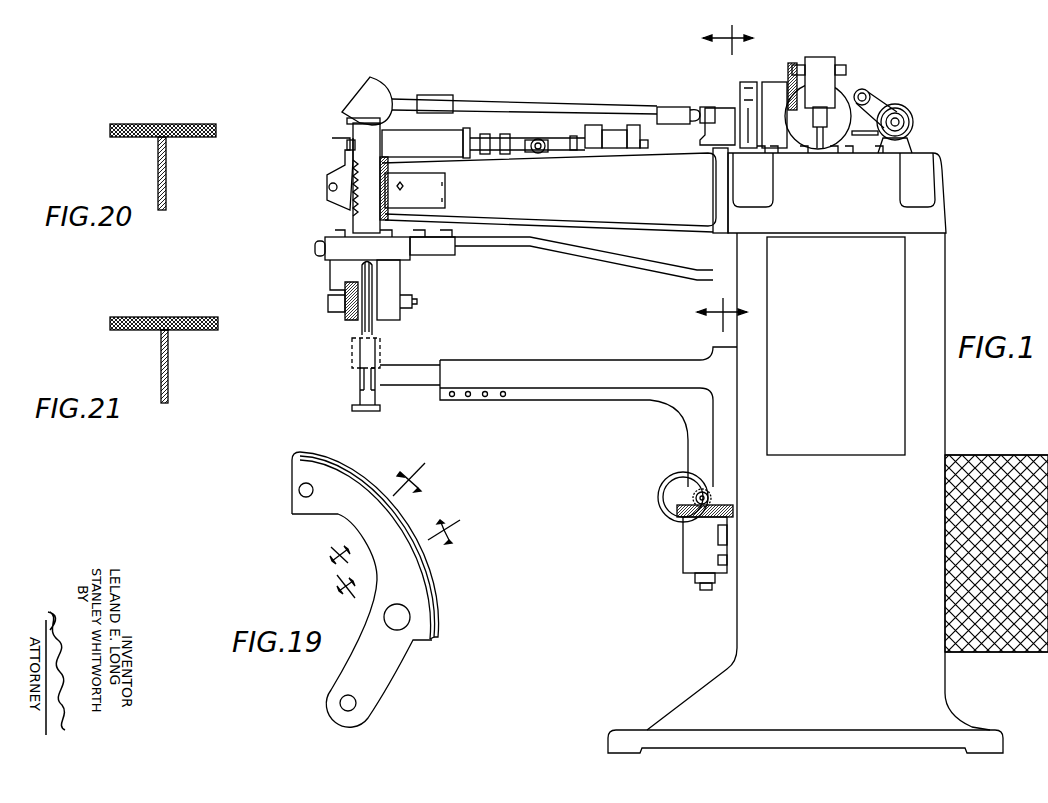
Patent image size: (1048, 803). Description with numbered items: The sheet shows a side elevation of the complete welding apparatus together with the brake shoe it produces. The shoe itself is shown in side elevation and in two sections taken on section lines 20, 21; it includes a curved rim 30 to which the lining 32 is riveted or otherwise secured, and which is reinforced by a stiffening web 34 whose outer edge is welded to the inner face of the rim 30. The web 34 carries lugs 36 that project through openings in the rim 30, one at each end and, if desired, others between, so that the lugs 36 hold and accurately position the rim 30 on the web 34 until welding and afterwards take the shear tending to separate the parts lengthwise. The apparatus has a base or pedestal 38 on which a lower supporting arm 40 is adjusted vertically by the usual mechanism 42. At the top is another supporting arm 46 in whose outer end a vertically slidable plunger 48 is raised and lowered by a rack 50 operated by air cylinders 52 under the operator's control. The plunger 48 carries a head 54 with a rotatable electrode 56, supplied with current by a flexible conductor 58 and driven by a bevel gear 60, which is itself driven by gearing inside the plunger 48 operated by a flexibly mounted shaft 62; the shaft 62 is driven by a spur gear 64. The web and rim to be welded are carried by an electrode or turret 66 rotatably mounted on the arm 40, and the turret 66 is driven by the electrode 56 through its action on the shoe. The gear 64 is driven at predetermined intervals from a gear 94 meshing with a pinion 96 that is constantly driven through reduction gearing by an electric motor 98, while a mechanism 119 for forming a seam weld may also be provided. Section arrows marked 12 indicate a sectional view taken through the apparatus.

In FIG. 1, the section line 12 is at (737, 178).
In FIG. 19, the section line 20— 20 is at (368, 509).
In FIG. 19, the section line 21— 21 is at (390, 548).
In FIG. 20, the rim 30 is at (151, 148).
In FIG. 21, the rim 30 is at (146, 347).
In FIG. 19, the rim 30 is at (433, 566).
In FIG. 20, the lining 32 is at (173, 125).
In FIG. 21, the lining 32 is at (190, 318).
In FIG. 19, the lining 32 is at (432, 588).
In FIG. 20, the stiffening web 34 is at (167, 178).
In FIG. 21, the stiffening web 34 is at (168, 365).
In FIG. 19, the stiffening web 34 is at (387, 657).
In FIG. 21, the lug 36 is at (161, 331).
In FIG. 1, the base or pedestal 38 is at (757, 613).
In FIG. 1, the lower supporting arm 40 is at (570, 378).
In FIG. 1, the adjusting mechanism 42 is at (675, 523).
In FIG. 1, the upper supporting arm 46 is at (503, 203).
In FIG. 1, the plunger 48 is at (368, 203).
In FIG. 1, the rack 50 is at (333, 162).
In FIG. 1, the air cylinder 52 is at (470, 140).
In FIG. 1, the head 54 is at (345, 245).
In FIG. 1, the rotatable electrode 56 is at (362, 327).
In FIG. 1, the flexible conductor 58 is at (560, 246).
In FIG. 1, the bevel gear 60 is at (342, 290).
In FIG. 1, the flexibly-mounted shaft 62 is at (527, 108).
In FIG. 1, the spur gear 64 is at (743, 110).
In FIG. 1, the turret electrode 66 is at (355, 380).
In FIG. 1, the gear 94 is at (797, 92).
In FIG. 1, the pinion 96 is at (788, 67).
In FIG. 1, the electric motor 98 is at (870, 100).
In FIG. 1, the seam weld mechanism 119 is at (908, 124).